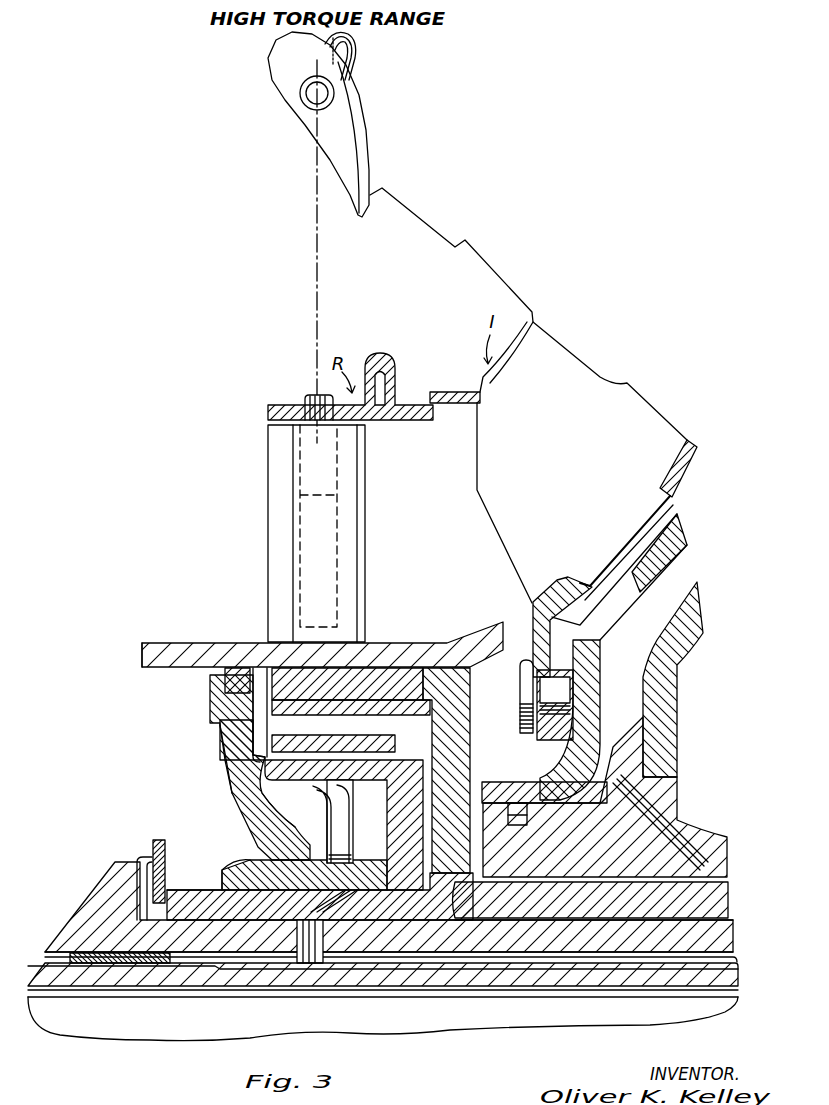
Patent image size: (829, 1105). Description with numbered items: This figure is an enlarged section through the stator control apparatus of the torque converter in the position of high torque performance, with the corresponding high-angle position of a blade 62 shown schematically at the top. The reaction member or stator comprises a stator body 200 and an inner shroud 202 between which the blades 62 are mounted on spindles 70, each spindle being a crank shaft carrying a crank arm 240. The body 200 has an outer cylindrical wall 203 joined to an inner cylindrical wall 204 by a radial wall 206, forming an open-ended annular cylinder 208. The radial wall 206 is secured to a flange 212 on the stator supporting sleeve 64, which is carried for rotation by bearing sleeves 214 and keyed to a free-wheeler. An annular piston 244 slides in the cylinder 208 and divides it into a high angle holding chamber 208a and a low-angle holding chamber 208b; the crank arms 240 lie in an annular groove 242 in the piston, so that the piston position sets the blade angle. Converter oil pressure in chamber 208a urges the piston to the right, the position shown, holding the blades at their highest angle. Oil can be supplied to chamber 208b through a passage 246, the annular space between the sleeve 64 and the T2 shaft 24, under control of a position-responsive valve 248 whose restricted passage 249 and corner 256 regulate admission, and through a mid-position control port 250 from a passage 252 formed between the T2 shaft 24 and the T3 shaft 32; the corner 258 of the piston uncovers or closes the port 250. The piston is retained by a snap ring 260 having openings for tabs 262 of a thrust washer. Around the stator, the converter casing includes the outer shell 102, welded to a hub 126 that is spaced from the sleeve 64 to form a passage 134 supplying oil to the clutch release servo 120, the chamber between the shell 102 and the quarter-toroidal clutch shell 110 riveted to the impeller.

The T2 shaft 24 is at (85, 900).
The T3 shaft 32 is at (697, 977).
The reaction blade 62 is at (338, 118).
The stator supporting sleeve 64 is at (718, 897).
The spindle 70 is at (300, 93).
The outer shell 102 is at (700, 620).
The quarter-toroidal shell 110 is at (675, 537).
The clutch release servo 120 is at (673, 592).
The hub 126 is at (700, 842).
The passage 134 is at (650, 845).
The stator body 200 is at (416, 628).
The inner shroud 202 is at (390, 378).
The outer cylindrical wall 203 is at (215, 655).
The inner cylindrical wall 204 is at (200, 887).
The radial wall 206 is at (440, 880).
The annular cylinder 208 is at (152, 667).
The high angle holding chamber 208a is at (226, 765).
The low-angle holding chamber 208b is at (292, 787).
The flange 212 is at (445, 693).
The bearing sleeve 214 is at (330, 935).
The crank arm 240 is at (345, 50).
The annular groove 242 is at (322, 858).
The annular piston 244 is at (222, 712).
The passage 246 is at (715, 925).
The position-responsive valve 248 is at (362, 698).
The restricted passage 249 is at (390, 723).
The mid-position control port 250 is at (318, 902).
The passage 252 is at (733, 967).
The corner or edge 256 is at (447, 750).
The corner or edge 258 is at (347, 837).
The snap ring 260 is at (153, 840).
The tab 262 is at (143, 857).